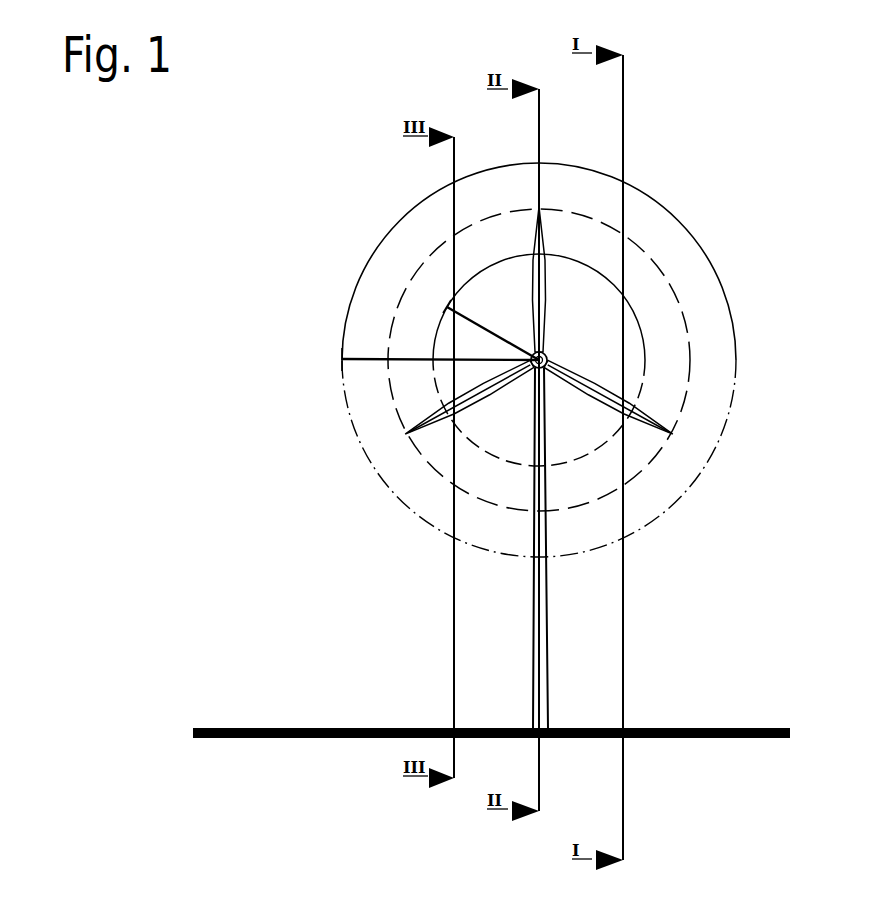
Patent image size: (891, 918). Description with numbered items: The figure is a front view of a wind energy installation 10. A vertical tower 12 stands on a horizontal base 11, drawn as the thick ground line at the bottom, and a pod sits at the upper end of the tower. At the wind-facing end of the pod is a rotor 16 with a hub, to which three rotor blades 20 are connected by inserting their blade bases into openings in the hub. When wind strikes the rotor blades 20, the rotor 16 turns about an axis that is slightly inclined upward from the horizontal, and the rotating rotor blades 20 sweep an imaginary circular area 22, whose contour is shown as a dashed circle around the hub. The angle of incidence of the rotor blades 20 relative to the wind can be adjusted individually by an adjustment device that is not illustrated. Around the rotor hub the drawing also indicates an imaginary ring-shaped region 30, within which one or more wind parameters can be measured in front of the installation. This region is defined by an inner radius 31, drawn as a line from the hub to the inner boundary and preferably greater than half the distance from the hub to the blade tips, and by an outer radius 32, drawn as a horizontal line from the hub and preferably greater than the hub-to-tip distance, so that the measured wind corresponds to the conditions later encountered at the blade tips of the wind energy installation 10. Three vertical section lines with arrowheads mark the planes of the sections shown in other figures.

The wind energy installation 10 is at (578, 511).
The horizontal base 11 is at (352, 738).
The vertical tower 12 is at (540, 616).
The rotor 16 is at (550, 346).
The rotor blades 20 is at (537, 233).
The imaginary circular area 22 is at (648, 257).
The ring-shaped region 30 is at (702, 311).
The inner radius 31 is at (450, 313).
The outer radius 32 is at (372, 360).